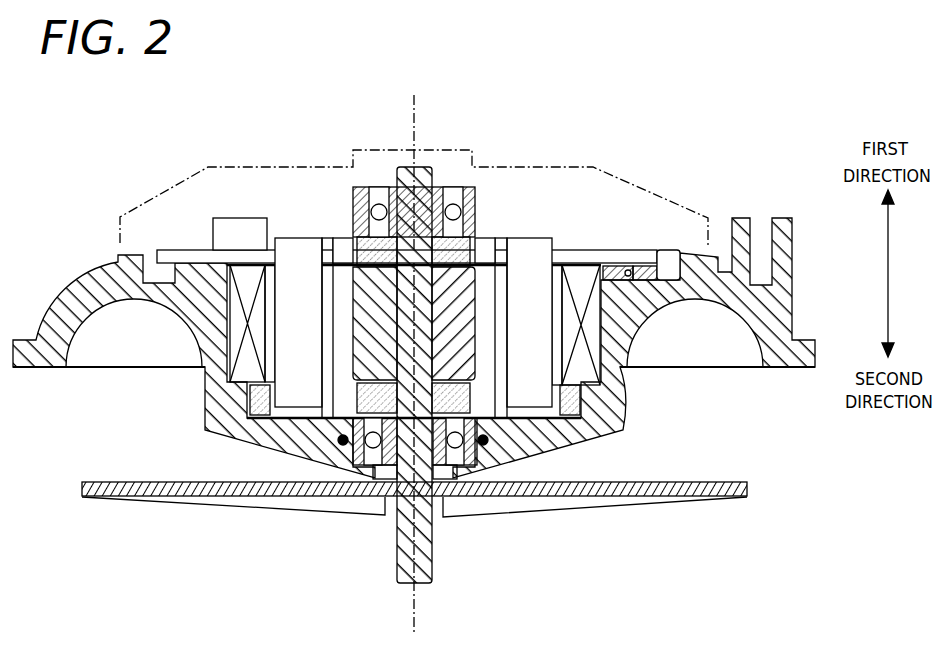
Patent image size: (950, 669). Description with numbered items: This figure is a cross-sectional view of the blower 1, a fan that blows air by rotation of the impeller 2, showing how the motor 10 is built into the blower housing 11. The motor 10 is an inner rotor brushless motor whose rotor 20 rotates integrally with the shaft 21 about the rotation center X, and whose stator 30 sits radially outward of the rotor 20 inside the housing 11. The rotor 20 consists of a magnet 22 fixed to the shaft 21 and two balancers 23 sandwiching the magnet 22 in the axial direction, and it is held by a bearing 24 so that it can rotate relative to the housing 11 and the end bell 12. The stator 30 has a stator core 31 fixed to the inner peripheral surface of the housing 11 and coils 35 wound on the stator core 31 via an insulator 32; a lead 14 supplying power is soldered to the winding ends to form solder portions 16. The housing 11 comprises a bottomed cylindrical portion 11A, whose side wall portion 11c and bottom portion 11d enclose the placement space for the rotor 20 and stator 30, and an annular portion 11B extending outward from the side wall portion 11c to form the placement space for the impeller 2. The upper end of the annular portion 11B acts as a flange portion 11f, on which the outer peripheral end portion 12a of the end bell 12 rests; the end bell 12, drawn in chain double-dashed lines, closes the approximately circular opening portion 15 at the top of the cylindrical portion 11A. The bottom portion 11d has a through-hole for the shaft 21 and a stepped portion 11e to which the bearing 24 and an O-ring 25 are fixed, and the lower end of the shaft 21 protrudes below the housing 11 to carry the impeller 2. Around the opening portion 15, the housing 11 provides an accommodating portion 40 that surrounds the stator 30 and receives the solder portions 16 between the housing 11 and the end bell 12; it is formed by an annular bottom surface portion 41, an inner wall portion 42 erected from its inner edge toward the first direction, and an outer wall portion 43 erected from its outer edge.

The blower 1 is at (798, 525).
The impeller 2 is at (752, 490).
The motor 10 is at (483, 114).
The blower housing 11 is at (203, 455).
The cylindrical portion 11A is at (203, 405).
The annular portion 11B is at (795, 306).
The side wall portion 11c is at (622, 392).
The bottom portion 11d is at (520, 442).
The stepped portion 11e is at (368, 452).
The flange portion 11f is at (702, 302).
The end bell 12 is at (200, 167).
The outer peripheral end portion 12a is at (710, 215).
The lead 14 is at (605, 258).
The opening portion 15 is at (226, 250).
The solder portion 16 is at (651, 302).
The rotor 20 is at (300, 272).
The shaft 21 is at (426, 583).
The magnet 22 is at (474, 252).
The balancer 23 is at (432, 170).
The bearing 24 is at (364, 187).
The O-ring 25 is at (335, 466).
The stator 30 is at (287, 400).
The stator core 31 is at (614, 438).
The insulator 32 is at (563, 442).
The coil 35 is at (243, 252).
The accommodating portion 40 is at (645, 173).
The bottom surface portion 41 is at (637, 268).
The inner wall portion 42 is at (620, 268).
The outer wall portion 43 is at (651, 262).
The rotation center X is at (408, 615).